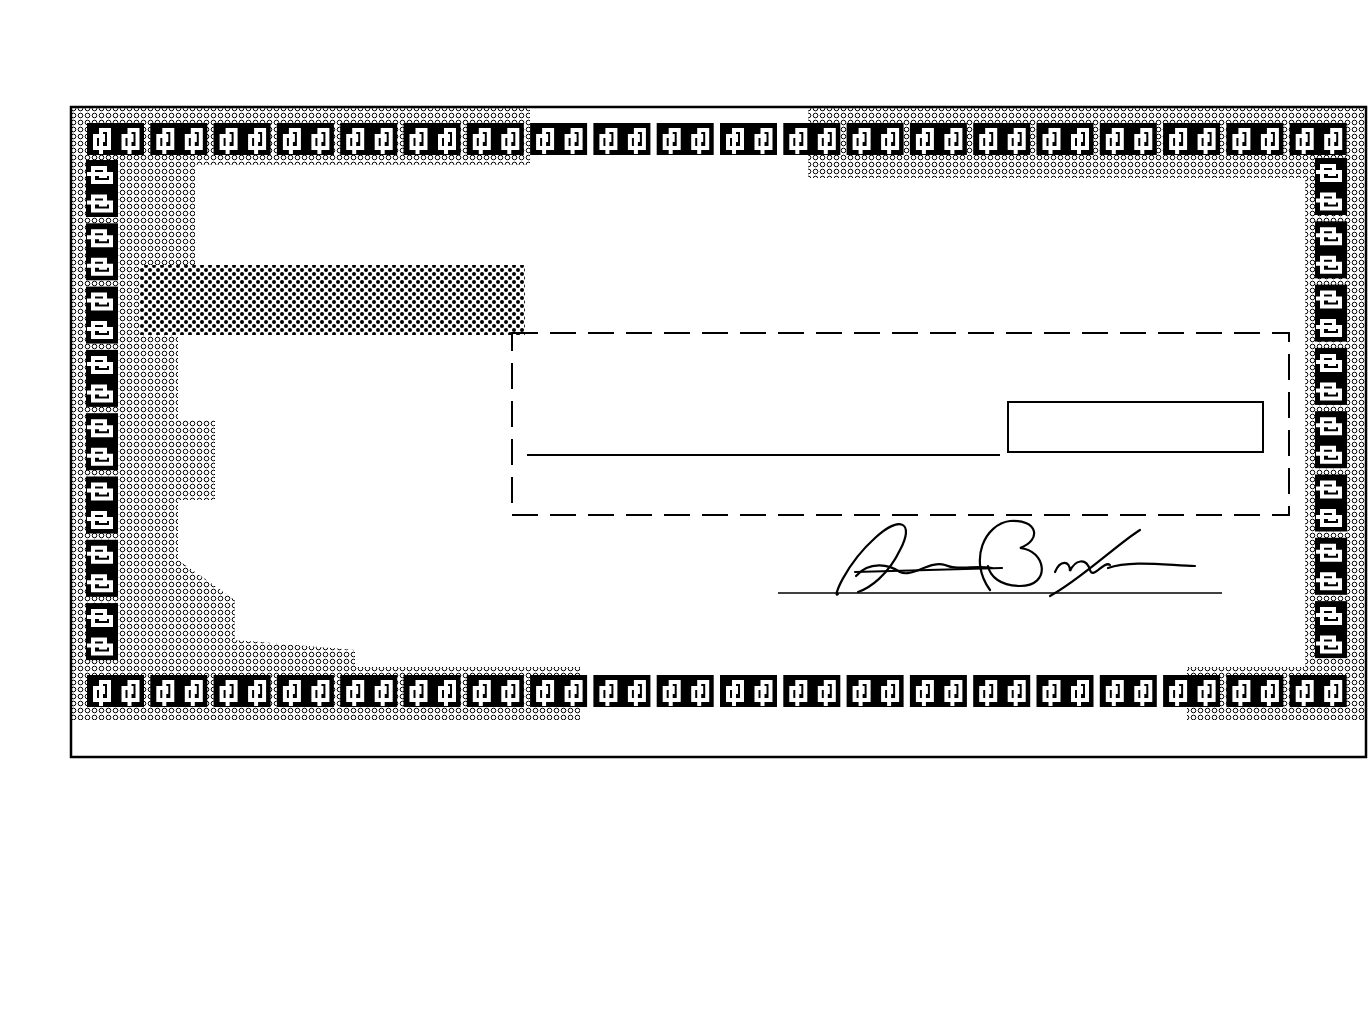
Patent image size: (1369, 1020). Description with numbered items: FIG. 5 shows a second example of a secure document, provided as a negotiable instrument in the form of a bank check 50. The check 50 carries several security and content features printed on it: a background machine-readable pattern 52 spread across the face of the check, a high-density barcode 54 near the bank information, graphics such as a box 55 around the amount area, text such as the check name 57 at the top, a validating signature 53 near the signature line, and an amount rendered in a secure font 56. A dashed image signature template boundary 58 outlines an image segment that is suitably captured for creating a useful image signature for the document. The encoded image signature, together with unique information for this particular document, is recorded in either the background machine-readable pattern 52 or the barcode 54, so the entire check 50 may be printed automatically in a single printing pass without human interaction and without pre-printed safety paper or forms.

The bank check 50 is at (116, 62).
The background machine-readable pattern 52 is at (180, 592).
The validating signature 53 is at (836, 573).
The high-density barcode 54 is at (527, 318).
The box 55 is at (1230, 395).
The secure font 56 is at (1195, 465).
The check name 57 is at (522, 212).
The image signature template boundary 58 is at (886, 332).